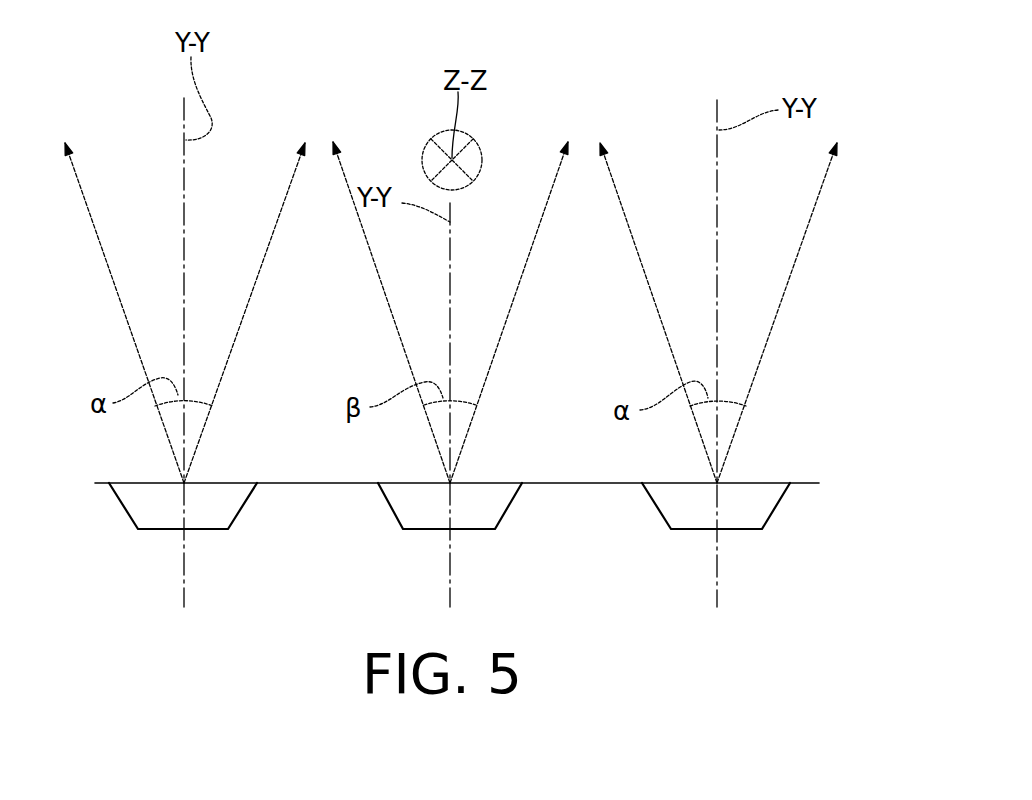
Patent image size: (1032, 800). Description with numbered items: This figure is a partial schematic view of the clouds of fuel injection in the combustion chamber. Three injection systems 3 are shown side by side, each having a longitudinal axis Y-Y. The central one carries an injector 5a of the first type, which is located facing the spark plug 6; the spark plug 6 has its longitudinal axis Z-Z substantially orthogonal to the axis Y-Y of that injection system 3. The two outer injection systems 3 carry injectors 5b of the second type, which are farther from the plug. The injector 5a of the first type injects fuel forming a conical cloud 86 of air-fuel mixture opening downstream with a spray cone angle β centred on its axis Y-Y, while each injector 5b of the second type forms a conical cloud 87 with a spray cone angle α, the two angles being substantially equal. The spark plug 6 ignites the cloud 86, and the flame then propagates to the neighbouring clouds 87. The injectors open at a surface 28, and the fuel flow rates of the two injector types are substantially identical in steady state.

The injection system 3 is at (112, 502).
The injector of a first type 5a is at (458, 477).
The injector of a second type 5b is at (150, 478).
The spark plug 6 is at (482, 158).
The nozzle plate surface 28 is at (810, 483).
The conical cloud of mixture of air and fuel 86 is at (508, 323).
The conical cloud of mixture of air and fuel 87 is at (243, 326).